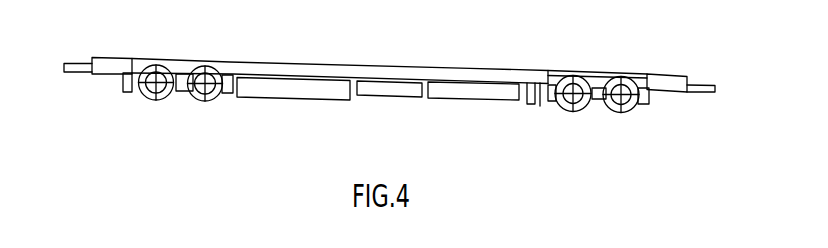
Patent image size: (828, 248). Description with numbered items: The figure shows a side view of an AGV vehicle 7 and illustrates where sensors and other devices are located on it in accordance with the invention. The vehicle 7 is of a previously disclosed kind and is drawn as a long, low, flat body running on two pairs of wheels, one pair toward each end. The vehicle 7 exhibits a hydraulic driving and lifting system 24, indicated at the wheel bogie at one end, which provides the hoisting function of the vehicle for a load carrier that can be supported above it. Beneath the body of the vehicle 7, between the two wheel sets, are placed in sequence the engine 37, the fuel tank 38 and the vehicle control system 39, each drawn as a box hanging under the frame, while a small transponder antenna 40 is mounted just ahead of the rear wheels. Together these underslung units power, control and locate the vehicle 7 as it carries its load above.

The trailer vehicle 7 is at (710, 70).
The wheel bogie 24 is at (131, 92).
The first compartment 37 is at (295, 98).
The second compartment 38 is at (394, 95).
The third compartment 39 is at (482, 99).
The support bracket 40 is at (540, 106).